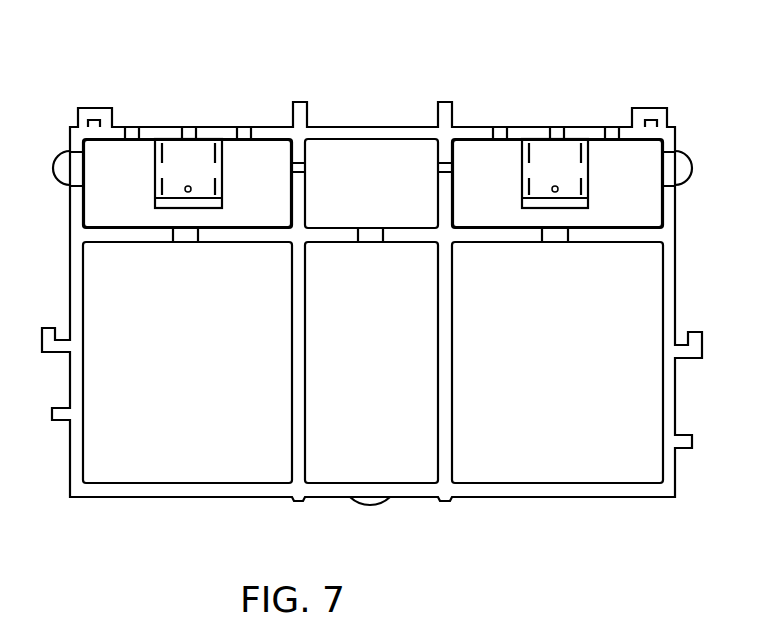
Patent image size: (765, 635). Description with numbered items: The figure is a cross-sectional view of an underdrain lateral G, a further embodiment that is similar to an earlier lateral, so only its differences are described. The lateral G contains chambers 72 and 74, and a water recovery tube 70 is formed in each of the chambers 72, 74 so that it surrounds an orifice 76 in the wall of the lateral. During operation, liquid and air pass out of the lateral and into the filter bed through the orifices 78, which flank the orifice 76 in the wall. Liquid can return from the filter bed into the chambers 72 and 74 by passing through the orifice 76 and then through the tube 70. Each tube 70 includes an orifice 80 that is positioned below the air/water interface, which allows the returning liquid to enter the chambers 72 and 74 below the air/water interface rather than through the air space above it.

The underdrain lateral G is at (396, 100).
The water recovery tube 70 is at (220, 190).
The chamber 72 is at (130, 242).
The chamber 74 is at (605, 220).
The orifice 76 is at (190, 130).
The orifice 78 is at (134, 130).
The orifice 80 is at (184, 189).